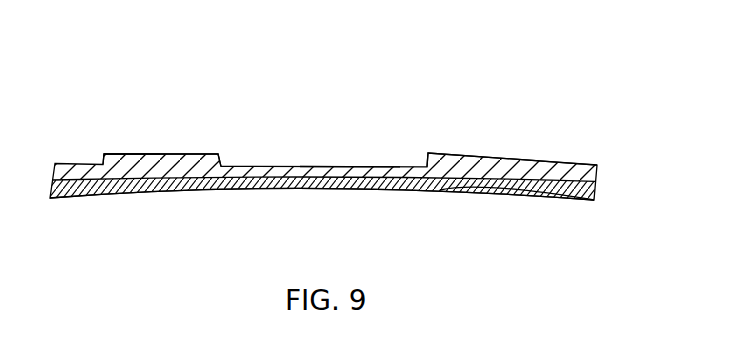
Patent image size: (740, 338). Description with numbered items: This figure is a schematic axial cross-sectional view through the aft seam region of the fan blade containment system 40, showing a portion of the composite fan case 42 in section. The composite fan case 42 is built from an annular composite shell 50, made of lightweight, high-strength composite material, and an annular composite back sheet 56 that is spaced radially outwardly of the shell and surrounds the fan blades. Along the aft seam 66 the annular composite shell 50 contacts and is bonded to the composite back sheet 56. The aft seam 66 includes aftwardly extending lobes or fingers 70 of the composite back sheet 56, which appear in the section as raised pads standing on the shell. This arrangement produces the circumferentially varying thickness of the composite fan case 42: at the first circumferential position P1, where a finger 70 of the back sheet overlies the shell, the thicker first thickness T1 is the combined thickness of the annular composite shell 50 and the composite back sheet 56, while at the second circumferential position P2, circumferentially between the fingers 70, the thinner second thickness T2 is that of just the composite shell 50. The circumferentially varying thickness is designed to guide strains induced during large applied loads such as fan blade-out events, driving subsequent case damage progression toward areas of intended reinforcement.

The fan blade containment system 40 is at (343, 202).
The composite fan case 42 is at (118, 197).
The annular composite shell 50 is at (258, 187).
The annular composite back sheet 56 is at (597, 165).
The aft seam 66 is at (526, 198).
The lobes or fingers 70 is at (195, 153).
The first circumferential position P1 is at (120, 155).
The second circumferential position P2 is at (350, 166).
The first thickness T1 is at (490, 150).
The second thickness T2 is at (365, 142).